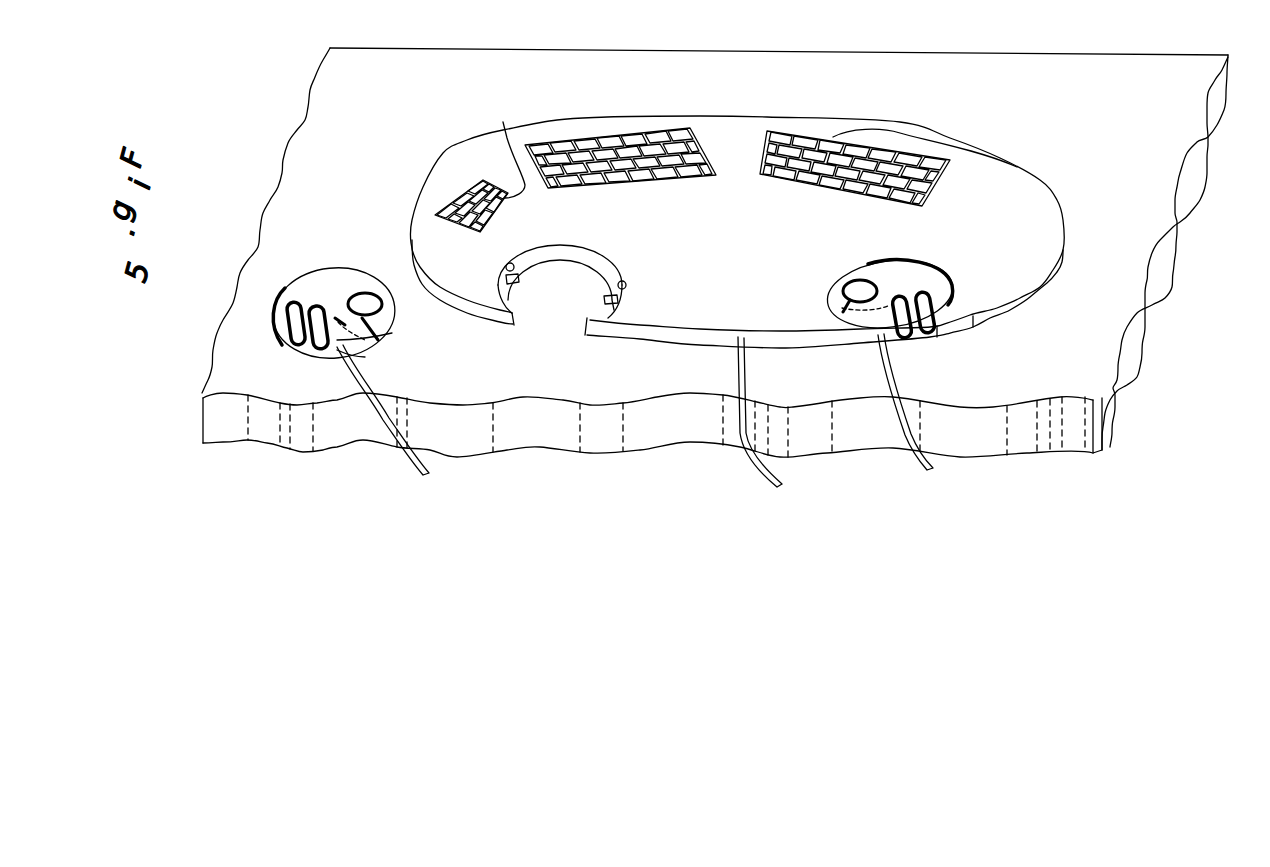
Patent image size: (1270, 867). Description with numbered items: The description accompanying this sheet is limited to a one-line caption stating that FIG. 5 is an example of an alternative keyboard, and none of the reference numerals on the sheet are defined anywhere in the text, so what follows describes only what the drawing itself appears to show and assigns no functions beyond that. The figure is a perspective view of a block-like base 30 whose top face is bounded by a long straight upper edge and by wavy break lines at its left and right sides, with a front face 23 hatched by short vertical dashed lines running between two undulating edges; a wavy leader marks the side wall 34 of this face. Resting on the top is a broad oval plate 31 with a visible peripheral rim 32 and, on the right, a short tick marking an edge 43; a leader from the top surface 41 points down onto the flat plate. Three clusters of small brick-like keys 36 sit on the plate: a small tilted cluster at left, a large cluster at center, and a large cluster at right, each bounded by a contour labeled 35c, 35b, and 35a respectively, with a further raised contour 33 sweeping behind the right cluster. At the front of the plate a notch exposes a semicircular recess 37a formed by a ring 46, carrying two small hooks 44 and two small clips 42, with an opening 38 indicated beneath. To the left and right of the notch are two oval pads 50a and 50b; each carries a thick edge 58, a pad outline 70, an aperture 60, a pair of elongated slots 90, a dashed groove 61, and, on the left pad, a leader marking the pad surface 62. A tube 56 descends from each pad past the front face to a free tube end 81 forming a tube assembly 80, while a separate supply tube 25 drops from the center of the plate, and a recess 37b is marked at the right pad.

The base block 23 is at (311, 138).
The supply tube 25 is at (742, 453).
The platform body 30 is at (1000, 138).
The circular disc 31 is at (1063, 214).
The disc rim 32 is at (1007, 320).
The raised pad 33 is at (893, 130).
The side wall 34 is at (677, 337).
The pad region 35a is at (932, 155).
The pad region 35b is at (713, 170).
The pad region 35c is at (503, 122).
The tile array 36 is at (462, 185).
The recess 37a is at (568, 252).
The recess 37b is at (827, 287).
The opening 38 is at (517, 281).
The top surface 41 is at (748, 127).
The clip 42 is at (503, 275).
The notch edge 43 is at (973, 327).
The hook 44 is at (507, 263).
The ring 46 is at (538, 252).
The mounting pad 50a is at (362, 274).
The mounting pad 50b is at (947, 263).
The tube 56 is at (352, 345).
The thickened edge 58 is at (270, 294).
The aperture 60 is at (392, 324).
The groove 61 is at (372, 350).
The pad surface 62 is at (322, 277).
The pad outline 70 is at (400, 304).
The tube assembly 80 is at (437, 467).
The tube end 81 is at (410, 470).
The slot 90 is at (289, 298).